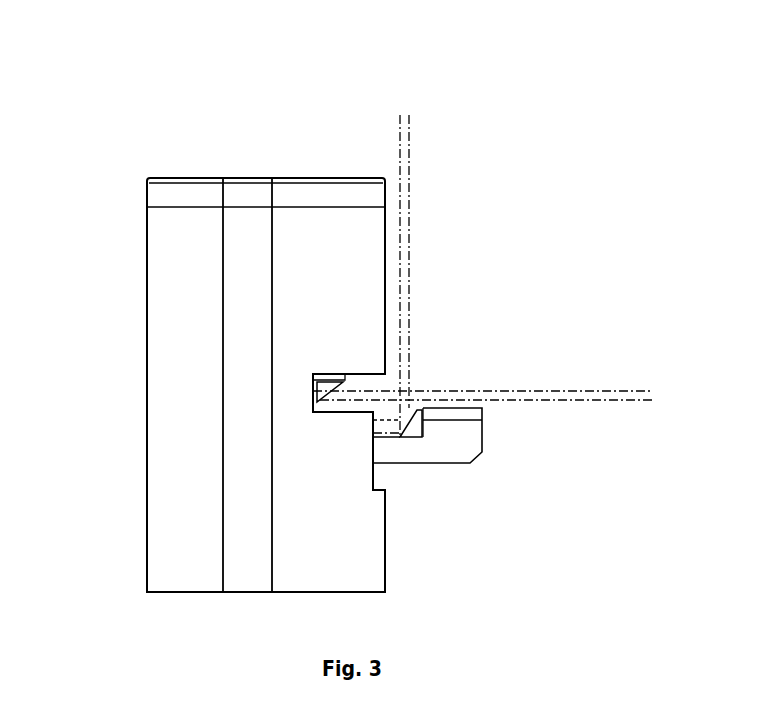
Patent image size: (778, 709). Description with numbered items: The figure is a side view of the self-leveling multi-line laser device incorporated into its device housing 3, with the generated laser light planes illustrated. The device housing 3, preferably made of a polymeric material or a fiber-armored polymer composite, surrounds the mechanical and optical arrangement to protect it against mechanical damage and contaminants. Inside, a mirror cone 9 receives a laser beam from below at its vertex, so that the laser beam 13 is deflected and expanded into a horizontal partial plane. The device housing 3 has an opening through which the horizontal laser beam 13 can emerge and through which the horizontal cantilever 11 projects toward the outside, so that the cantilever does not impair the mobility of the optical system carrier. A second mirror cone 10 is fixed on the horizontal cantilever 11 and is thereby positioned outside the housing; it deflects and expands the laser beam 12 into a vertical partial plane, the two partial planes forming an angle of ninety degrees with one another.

The device housing 3 is at (158, 317).
The mirror cone 9 is at (322, 387).
The mirror cone 10 is at (412, 433).
The horizontal cantilever 11 is at (467, 444).
The laser beam 12 is at (403, 160).
The horizontal laser beam 13 is at (597, 391).